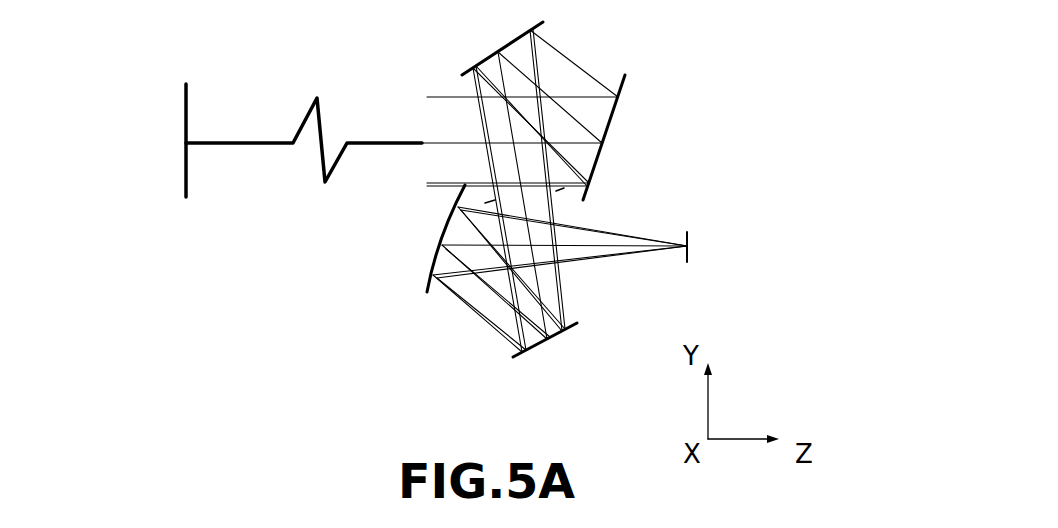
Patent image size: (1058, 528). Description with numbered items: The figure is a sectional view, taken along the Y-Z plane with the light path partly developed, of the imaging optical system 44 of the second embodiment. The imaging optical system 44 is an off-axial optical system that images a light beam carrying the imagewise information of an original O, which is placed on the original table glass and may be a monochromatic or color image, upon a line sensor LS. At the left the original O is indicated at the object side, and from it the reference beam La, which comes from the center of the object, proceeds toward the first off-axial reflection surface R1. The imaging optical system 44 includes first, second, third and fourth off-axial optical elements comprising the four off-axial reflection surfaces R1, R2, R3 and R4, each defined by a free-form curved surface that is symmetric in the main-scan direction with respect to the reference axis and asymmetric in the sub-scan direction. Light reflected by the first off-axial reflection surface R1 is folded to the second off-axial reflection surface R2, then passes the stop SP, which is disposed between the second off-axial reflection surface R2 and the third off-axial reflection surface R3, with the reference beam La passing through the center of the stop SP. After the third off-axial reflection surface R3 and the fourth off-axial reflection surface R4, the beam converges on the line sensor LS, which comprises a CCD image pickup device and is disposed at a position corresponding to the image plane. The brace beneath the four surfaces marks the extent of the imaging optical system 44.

The original O is at (186, 96).
The reference beam La is at (258, 143).
The first off-axial reflection surface R1 is at (600, 142).
The second off-axial reflection surface R2 is at (493, 55).
The third off-axial reflection surface R3 is at (566, 329).
The fourth off-axial reflection surface R4 is at (438, 260).
The stop SP is at (563, 195).
The line sensor LS is at (689, 237).
The imaging optical system 44 is at (643, 377).